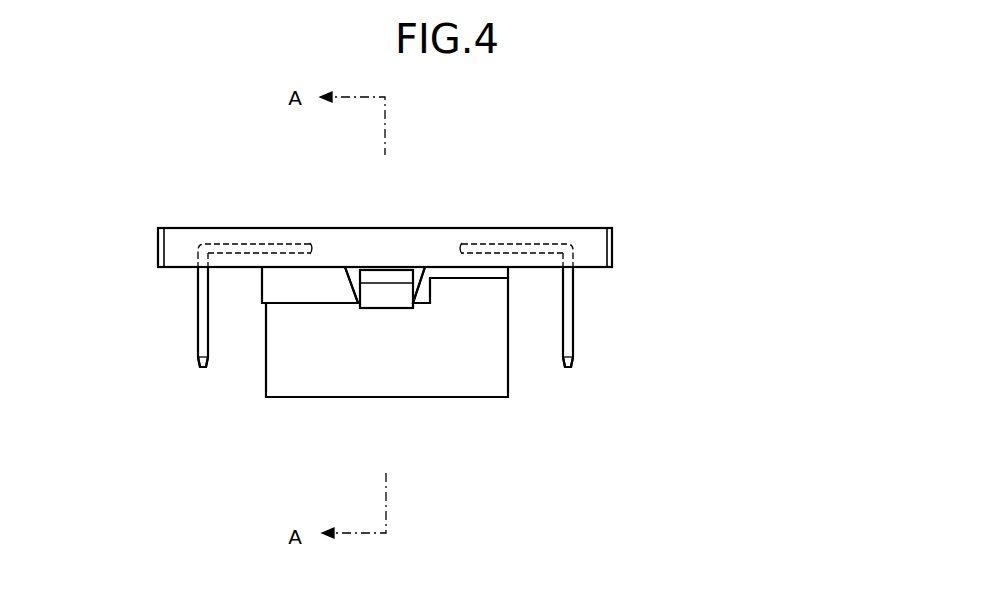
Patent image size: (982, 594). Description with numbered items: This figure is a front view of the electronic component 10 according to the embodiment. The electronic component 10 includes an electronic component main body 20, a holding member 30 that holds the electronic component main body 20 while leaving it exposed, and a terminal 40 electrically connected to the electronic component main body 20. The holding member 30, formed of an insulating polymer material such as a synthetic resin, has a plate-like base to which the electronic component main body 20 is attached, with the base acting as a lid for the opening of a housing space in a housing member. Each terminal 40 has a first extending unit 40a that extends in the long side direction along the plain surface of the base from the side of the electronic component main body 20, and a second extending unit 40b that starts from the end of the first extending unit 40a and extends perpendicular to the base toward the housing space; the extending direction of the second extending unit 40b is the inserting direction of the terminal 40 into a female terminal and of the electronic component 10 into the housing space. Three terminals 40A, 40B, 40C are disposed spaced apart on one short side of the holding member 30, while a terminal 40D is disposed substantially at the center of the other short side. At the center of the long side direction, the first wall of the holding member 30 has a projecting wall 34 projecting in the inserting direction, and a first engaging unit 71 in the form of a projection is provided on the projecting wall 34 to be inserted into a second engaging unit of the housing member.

The electronic component 10 is at (470, 138).
The electronic component main body 20 is at (355, 398).
The holding member 30 is at (185, 228).
The projecting wall 34 is at (332, 290).
The terminal 40 is at (458, 310).
The terminal 40A is at (703, 310).
The terminal 40B is at (568, 310).
The terminal 40C is at (587, 285).
The terminal 40D is at (185, 287).
The first extending unit 40a is at (250, 244).
The second extending unit 40b is at (197, 343).
The first engaging unit 71 is at (384, 270).